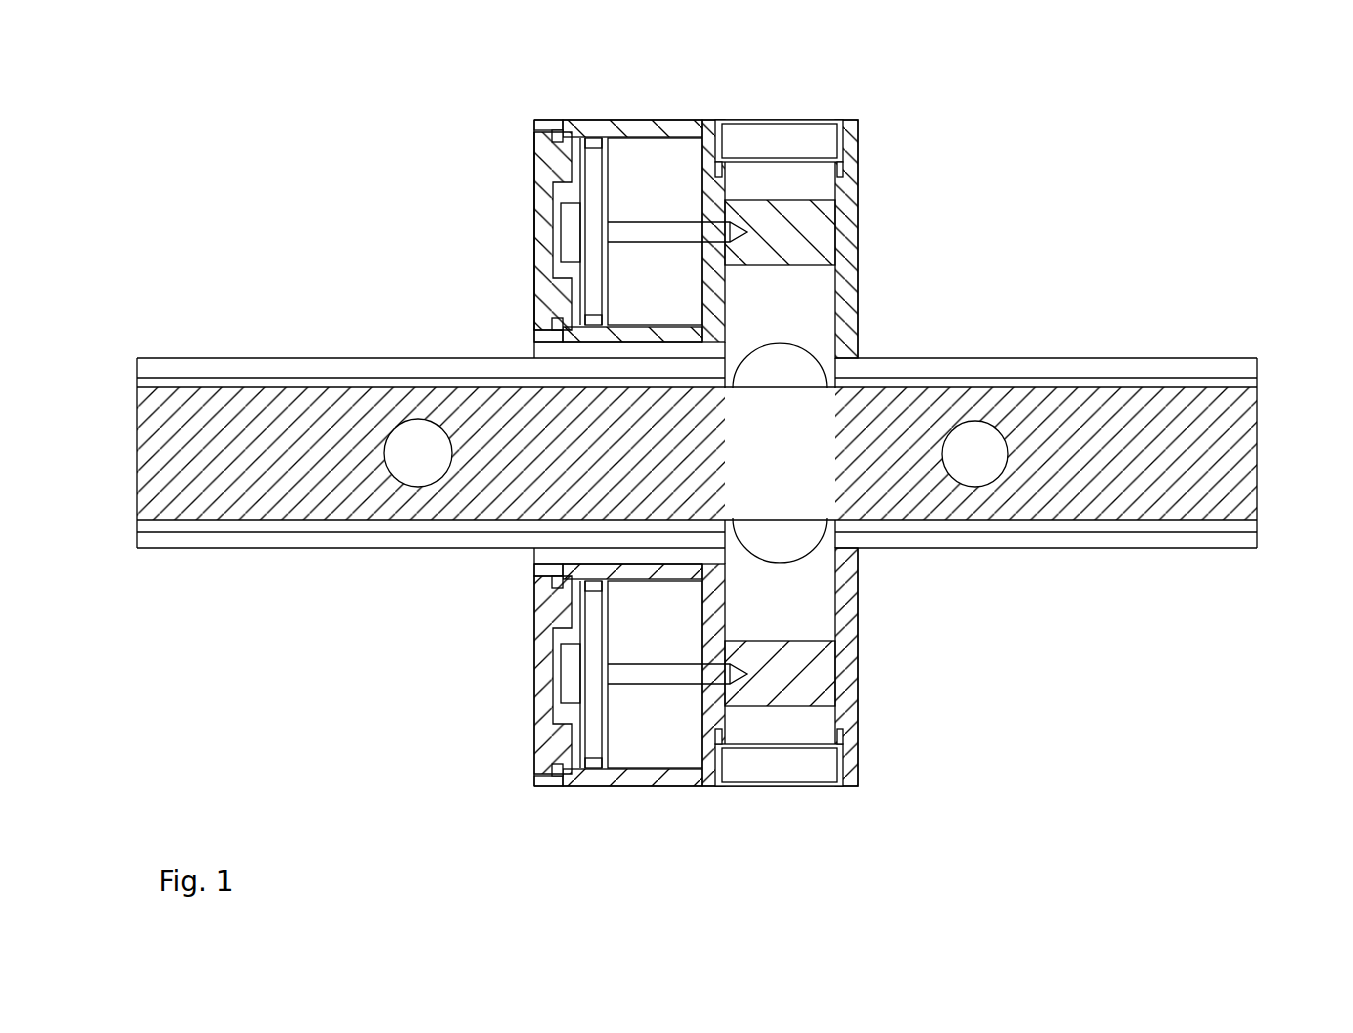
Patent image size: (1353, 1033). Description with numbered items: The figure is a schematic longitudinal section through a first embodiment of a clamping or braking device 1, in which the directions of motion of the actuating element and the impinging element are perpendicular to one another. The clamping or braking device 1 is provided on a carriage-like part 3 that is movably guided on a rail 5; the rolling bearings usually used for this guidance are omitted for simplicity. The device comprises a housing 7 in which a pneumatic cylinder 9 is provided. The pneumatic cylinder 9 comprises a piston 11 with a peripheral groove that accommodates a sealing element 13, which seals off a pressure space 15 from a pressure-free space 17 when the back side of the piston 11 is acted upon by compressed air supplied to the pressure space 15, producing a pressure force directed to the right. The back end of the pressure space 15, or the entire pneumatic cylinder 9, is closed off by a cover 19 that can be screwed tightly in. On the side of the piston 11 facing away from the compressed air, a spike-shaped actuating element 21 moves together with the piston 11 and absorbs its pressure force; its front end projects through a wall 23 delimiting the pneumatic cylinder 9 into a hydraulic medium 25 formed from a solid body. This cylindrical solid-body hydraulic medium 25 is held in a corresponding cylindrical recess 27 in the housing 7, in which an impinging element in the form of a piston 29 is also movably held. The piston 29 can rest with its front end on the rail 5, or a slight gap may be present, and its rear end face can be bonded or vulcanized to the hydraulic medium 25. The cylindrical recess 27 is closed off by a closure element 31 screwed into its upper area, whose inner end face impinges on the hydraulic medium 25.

The clamping or braking device 1 is at (866, 222).
The carriage-like part 3 is at (697, 96).
The rail 5 is at (1247, 462).
The housing 7 is at (845, 311).
The pneumatic cylinder 9 is at (528, 295).
The piston 11 is at (598, 194).
The sealing element 13 is at (597, 138).
The pressure space 15 is at (571, 138).
The pressure-free space 17 is at (648, 296).
The cover 19 is at (543, 165).
The spike-shaped actuating element 21 is at (663, 232).
The wall 23 is at (712, 300).
The hydraulic medium 25 is at (810, 218).
The cylindrical recess 27 is at (830, 285).
The piston 29 is at (797, 340).
The closure element 31 is at (805, 128).